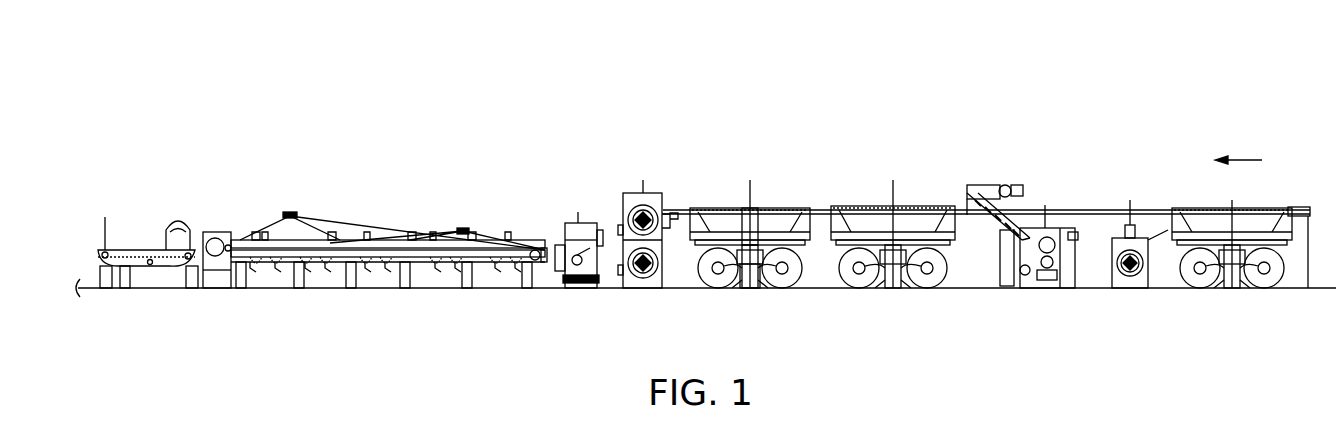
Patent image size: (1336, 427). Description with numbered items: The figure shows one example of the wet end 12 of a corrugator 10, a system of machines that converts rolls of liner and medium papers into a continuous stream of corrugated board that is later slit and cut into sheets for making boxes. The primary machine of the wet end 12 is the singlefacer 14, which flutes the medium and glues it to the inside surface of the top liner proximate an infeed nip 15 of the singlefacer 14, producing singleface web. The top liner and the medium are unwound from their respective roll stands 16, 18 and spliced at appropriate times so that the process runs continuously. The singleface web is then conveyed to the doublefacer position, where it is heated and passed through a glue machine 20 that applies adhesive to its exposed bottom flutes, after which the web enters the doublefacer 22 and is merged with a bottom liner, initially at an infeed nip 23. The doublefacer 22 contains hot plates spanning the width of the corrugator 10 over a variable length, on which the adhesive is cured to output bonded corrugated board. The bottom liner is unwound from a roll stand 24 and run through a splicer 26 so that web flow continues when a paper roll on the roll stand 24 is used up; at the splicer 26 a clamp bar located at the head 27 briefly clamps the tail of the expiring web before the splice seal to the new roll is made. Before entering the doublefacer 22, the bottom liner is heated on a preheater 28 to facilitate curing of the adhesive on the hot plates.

The corrugator 10 is at (219, 71).
The wet end 12 is at (937, 115).
The singlefacer 14 is at (1033, 189).
The infeed nip 15 is at (1063, 289).
The roll stand 16 is at (1240, 300).
The roll stand 18 is at (895, 302).
The glue machine 20 is at (572, 188).
The doublefacer 22 is at (384, 209).
The infeed nip 23 is at (537, 259).
The roll stand 24 is at (764, 304).
The splicer 26 is at (747, 278).
The head 27 is at (749, 242).
The preheater 28 is at (641, 161).